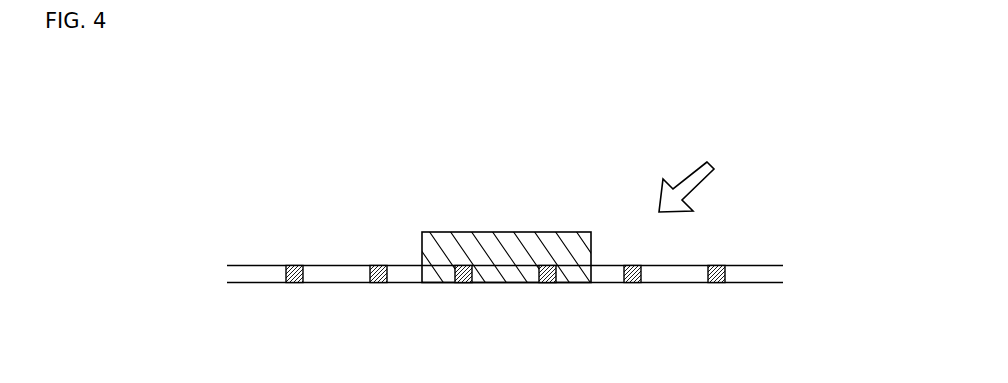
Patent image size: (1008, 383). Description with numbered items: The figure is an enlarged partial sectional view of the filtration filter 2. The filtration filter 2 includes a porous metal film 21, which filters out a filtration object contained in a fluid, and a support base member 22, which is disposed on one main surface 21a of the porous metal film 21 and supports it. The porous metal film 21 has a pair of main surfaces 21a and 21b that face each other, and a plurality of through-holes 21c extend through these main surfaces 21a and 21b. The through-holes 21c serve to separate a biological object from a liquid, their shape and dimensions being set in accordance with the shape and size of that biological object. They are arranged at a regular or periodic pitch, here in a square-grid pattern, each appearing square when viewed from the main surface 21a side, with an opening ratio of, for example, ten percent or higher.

The filtration filter 2 is at (210, 148).
The porous metal film 21 is at (362, 265).
The support base member 22 is at (565, 243).
The main surface 21a is at (754, 265).
The main surface 21b is at (763, 284).
The through-holes 21c is at (673, 275).